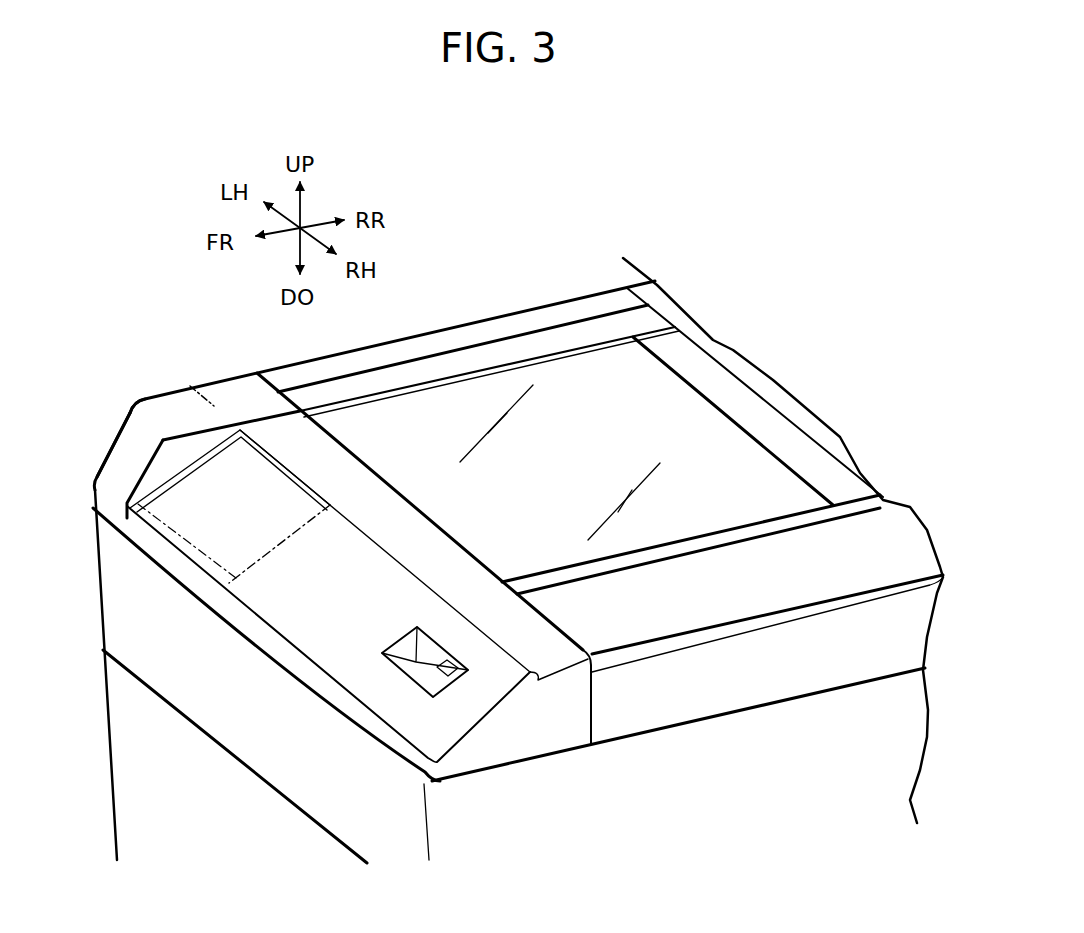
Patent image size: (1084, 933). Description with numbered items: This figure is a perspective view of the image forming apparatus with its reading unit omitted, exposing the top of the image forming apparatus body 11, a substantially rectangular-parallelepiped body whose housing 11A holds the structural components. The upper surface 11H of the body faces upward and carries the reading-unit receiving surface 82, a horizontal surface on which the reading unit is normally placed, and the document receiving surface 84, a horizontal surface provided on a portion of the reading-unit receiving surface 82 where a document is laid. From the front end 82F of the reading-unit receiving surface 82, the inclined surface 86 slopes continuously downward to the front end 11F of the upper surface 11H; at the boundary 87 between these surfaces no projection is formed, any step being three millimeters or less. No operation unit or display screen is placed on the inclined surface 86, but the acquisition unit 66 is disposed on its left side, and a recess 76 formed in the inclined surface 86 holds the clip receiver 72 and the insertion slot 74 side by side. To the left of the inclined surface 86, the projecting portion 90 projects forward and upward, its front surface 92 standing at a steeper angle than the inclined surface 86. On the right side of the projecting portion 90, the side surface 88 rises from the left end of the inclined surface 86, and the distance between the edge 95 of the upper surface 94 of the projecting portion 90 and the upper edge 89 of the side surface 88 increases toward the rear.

The image forming apparatus body 11 is at (102, 596).
The housing 11A is at (110, 732).
The front end 11F is at (250, 610).
The upper surface 11H is at (886, 525).
The acquisition unit 66 is at (213, 565).
The clip receiver 72 is at (390, 660).
The insertion slot 74 is at (447, 665).
The recess 76 is at (434, 640).
The reading-unit receiving surface 82 is at (766, 634).
The front end of the reading-unit receiving surface 82F is at (401, 562).
The document receiving surface 84 is at (600, 368).
The inclined surface 86 is at (300, 630).
The boundary 87 is at (360, 530).
The side surface 88 is at (157, 472).
The upper edge of the side surface 89 is at (215, 437).
The projecting portion 90 is at (171, 384).
The front surface of the projecting portion 92 is at (133, 440).
The upper surface of the projecting portion 94 is at (148, 407).
The edge of the upper surface of the projecting portion 95 is at (212, 412).